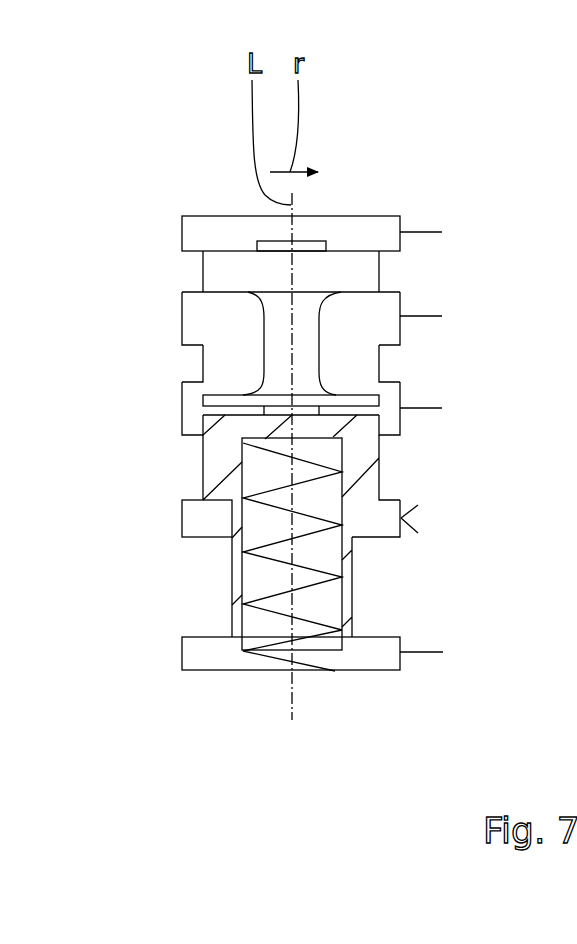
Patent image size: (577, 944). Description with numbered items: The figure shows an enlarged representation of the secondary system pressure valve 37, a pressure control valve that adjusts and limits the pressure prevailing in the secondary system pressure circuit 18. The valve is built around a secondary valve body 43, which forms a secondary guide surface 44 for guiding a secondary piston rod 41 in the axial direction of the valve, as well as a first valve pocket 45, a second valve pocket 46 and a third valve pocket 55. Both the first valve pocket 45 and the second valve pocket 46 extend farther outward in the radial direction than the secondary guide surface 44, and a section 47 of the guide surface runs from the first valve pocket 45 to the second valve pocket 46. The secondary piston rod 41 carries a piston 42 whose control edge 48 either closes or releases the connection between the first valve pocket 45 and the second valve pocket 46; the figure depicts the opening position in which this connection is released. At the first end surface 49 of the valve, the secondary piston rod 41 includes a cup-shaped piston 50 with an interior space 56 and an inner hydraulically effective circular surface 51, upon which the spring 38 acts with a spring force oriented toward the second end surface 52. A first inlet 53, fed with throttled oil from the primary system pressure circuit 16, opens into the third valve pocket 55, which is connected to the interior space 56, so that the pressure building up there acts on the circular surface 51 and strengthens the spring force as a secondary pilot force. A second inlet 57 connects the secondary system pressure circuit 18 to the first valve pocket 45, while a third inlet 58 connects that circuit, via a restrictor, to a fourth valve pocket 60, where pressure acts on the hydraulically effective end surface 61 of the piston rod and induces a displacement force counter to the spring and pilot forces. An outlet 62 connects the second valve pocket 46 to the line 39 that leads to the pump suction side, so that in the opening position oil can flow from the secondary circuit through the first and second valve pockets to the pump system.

The primary system pressure circuit 16 is at (420, 655).
The secondary system pressure circuit 18 is at (422, 232).
The secondary system pressure valve 37 is at (140, 230).
The second spring 38 is at (242, 600).
The line 39 is at (440, 410).
The secondary piston rod 41 is at (280, 328).
The piston 42 is at (217, 400).
The secondary valve body 43 is at (190, 340).
The secondary guide surface 44 is at (345, 361).
The first valve pocket 45 is at (195, 297).
The second valve pocket 46 is at (193, 417).
The section 47 is at (216, 350).
The control edge 48 is at (380, 396).
The first end surface 49 is at (330, 683).
The cup-shaped piston 50 is at (225, 465).
The inner hydraulically effective circular surface 51 is at (309, 450).
The second end surface 52 is at (217, 207).
The first inlet 53 is at (408, 643).
The third valve pocket 55 is at (197, 655).
The interior space 56 is at (262, 577).
The second inlet 57 is at (413, 326).
The third inlet 58 is at (413, 240).
The fourth valve pocket 60 is at (370, 232).
The hydraulically effective end surface 61 is at (277, 240).
The outlet 62 is at (405, 413).